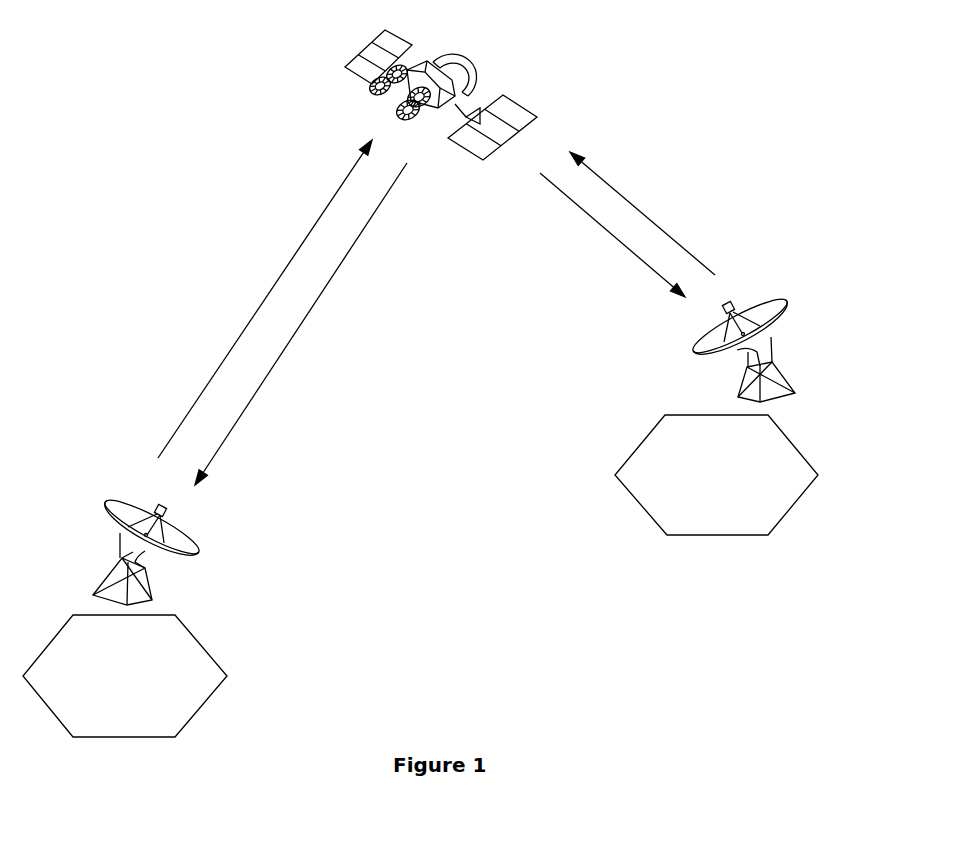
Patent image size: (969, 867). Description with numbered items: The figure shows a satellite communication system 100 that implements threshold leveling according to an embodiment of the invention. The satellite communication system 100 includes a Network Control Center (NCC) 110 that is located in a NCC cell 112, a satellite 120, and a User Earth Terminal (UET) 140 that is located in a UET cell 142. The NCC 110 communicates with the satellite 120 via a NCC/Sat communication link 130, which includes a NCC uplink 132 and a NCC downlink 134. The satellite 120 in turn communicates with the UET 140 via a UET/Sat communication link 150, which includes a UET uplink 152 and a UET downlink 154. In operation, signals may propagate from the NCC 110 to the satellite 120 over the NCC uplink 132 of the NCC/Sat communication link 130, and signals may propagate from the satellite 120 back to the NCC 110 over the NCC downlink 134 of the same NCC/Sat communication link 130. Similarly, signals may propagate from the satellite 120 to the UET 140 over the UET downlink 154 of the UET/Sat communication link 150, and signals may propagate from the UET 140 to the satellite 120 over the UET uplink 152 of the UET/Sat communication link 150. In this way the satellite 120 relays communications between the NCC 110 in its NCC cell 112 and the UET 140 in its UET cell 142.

The satellite communication system 100 is at (678, 63).
The Network Control Center (NCC) 110 is at (778, 293).
The NCC cell 112 is at (797, 445).
The satellite 120 is at (462, 73).
The NCC/Sat communication link 130 is at (678, 152).
The NCC uplink 132 is at (648, 218).
The NCC downlink 134 is at (617, 242).
The User Earth Terminal (UET) 140 is at (197, 543).
The UET cell 142 is at (203, 645).
The UET/Sat communication link 150 is at (234, 255).
The UET uplink 152 is at (287, 347).
The UET downlink 154 is at (238, 340).